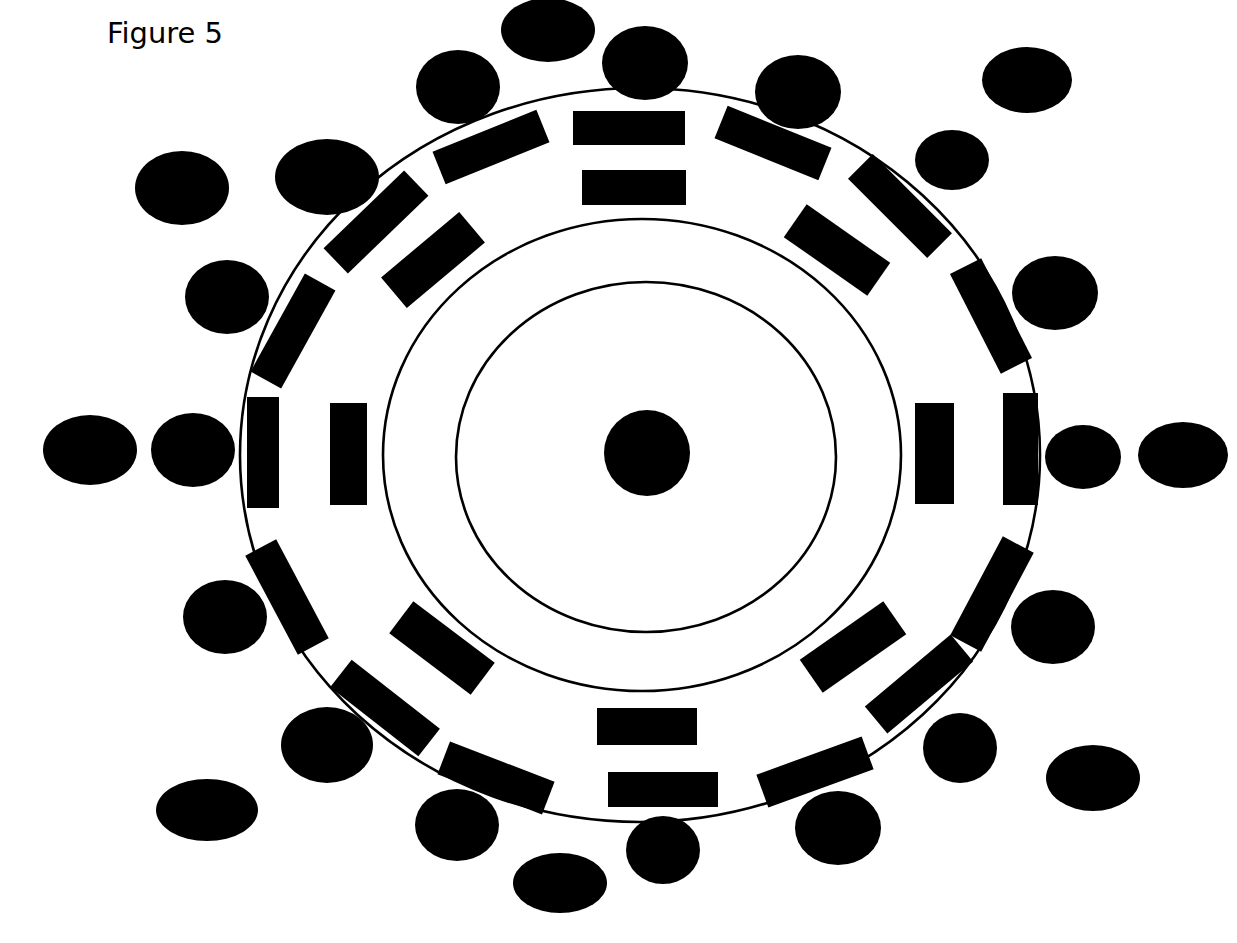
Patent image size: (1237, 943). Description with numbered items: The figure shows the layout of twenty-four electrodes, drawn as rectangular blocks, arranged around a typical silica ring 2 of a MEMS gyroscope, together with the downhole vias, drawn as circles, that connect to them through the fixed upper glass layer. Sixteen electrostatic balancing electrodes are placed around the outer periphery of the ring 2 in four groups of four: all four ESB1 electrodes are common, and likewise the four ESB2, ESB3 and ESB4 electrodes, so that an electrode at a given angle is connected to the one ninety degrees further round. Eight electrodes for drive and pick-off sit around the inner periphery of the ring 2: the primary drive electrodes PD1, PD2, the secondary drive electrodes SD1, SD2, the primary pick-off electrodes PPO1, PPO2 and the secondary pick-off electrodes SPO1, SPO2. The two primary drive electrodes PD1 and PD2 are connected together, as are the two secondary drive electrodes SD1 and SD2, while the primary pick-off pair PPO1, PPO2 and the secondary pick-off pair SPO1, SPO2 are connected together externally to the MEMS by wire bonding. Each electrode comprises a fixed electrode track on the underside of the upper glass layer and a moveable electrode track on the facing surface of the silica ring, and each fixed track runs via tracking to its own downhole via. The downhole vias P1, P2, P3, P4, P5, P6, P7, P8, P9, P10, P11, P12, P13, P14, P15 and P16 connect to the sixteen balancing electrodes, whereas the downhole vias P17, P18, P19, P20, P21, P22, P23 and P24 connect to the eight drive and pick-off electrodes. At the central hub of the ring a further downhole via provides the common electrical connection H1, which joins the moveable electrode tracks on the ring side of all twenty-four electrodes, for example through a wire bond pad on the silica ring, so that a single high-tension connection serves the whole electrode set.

The silica ring 2 is at (903, 302).
The common electrical connection H1 is at (647, 453).
The downhole via P1 is at (645, 63).
The downhole via P2 is at (798, 92).
The downhole via P3 is at (952, 160).
The downhole via P4 is at (1055, 293).
The downhole via P5 is at (1083, 457).
The downhole via P6 is at (1053, 627).
The downhole via P7 is at (960, 748).
The downhole via P8 is at (838, 828).
The downhole via P9 is at (663, 850).
The downhole via P10 is at (457, 825).
The downhole via P11 is at (327, 745).
The downhole via P12 is at (225, 617).
The downhole via P13 is at (193, 450).
The downhole via P14 is at (227, 297).
The downhole via P15 is at (327, 177).
The downhole via P16 is at (458, 87).
The downhole via P17 is at (1027, 80).
The downhole via P18 is at (1183, 455).
The downhole via P19 is at (1093, 778).
The downhole via P20 is at (560, 883).
The downhole via P21 is at (207, 810).
The downhole via P22 is at (90, 450).
The downhole via P23 is at (182, 188).
The downhole via P24 is at (548, 31).
The electrostatic balancing electrode ESB1 is at (642, 459).
The electrostatic balancing electrode ESB2 is at (642, 460).
The electrostatic balancing electrode ESB3 is at (649, 455).
The electrostatic balancing electrode ESB4 is at (638, 459).
The primary drive electrode PD1 is at (634, 187).
The primary drive electrode PD2 is at (647, 726).
The primary pick-off electrode PPO1 is at (934, 453).
The primary pick-off electrode PPO2 is at (348, 454).
The secondary drive electrode SD1 is at (837, 249).
The secondary drive electrode SD2 is at (442, 647).
The secondary pick-off electrode SPO1 is at (433, 260).
The secondary pick-off electrode SPO2 is at (853, 646).